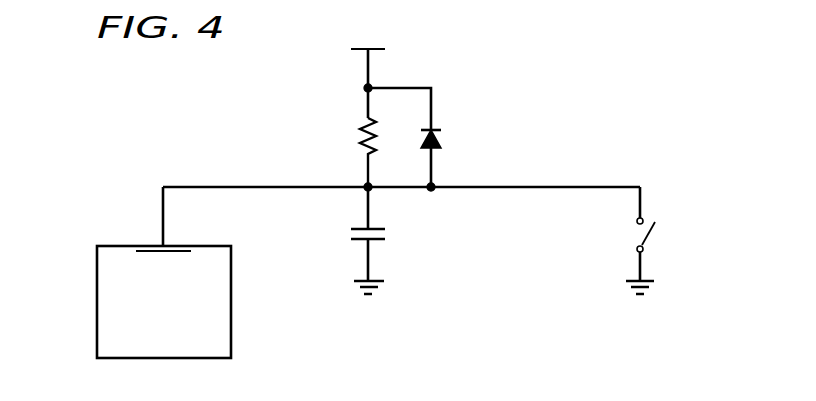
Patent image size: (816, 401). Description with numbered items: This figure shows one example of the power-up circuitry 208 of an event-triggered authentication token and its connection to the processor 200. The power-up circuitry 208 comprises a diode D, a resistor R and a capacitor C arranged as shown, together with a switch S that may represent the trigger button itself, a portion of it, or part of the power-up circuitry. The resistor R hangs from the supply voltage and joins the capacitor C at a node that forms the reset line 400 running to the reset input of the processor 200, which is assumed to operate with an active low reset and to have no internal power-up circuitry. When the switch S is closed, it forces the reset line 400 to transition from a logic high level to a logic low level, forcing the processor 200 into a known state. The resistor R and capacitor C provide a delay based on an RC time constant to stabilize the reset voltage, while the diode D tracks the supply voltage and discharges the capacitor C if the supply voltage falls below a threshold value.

The processor 200 is at (97, 301).
The power-up circuitry 208 is at (554, 80).
The reset line 400 is at (234, 187).